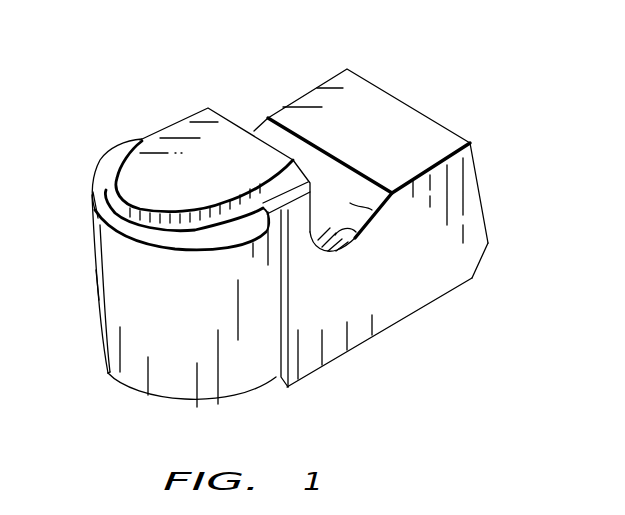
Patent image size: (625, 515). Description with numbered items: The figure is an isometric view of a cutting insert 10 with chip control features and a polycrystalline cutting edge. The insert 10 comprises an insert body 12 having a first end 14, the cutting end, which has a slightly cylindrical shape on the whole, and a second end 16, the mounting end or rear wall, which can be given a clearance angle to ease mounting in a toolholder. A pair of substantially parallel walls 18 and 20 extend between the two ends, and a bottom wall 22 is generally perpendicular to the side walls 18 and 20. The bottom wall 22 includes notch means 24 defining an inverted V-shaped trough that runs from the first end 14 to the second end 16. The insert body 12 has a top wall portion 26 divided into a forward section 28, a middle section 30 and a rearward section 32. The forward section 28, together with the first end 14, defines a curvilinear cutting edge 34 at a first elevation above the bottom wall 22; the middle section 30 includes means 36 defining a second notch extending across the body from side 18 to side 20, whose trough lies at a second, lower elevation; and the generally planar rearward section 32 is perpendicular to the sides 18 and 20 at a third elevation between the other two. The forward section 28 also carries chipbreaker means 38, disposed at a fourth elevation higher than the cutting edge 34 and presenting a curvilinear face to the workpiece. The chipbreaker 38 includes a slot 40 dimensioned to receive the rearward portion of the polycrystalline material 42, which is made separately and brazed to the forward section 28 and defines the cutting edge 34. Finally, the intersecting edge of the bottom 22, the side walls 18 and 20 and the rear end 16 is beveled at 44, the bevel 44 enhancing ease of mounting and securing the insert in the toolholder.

The cutting insert 10 is at (212, 58).
The insert body 12 is at (232, 370).
The first end 14 is at (113, 276).
The second end 16 is at (482, 186).
The wall 18 is at (400, 297).
The wall 20 is at (284, 105).
The bottom wall 22 is at (332, 362).
The notch means 24 is at (122, 372).
The top wall portion 26 is at (193, 128).
The forward section 28 is at (102, 165).
The middle section 30 is at (372, 212).
The rearward section 32 is at (380, 108).
The cutting edge 34 is at (93, 237).
The second notch means 36 is at (357, 248).
The chipbreaker means 38 is at (142, 162).
The slot 40 is at (92, 188).
The polycrystalline material 42 is at (164, 246).
The bevel 44 is at (485, 255).